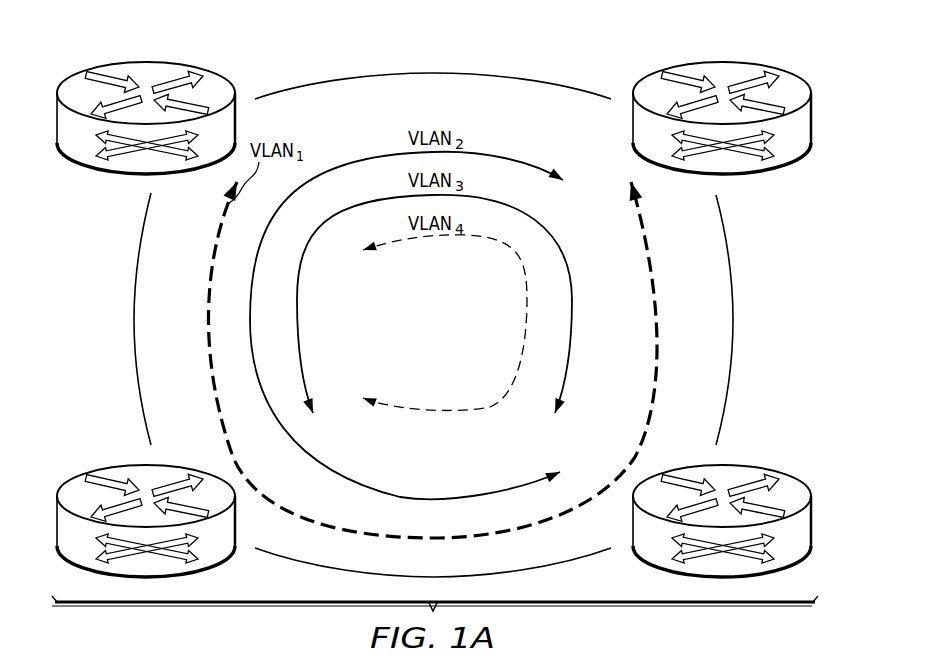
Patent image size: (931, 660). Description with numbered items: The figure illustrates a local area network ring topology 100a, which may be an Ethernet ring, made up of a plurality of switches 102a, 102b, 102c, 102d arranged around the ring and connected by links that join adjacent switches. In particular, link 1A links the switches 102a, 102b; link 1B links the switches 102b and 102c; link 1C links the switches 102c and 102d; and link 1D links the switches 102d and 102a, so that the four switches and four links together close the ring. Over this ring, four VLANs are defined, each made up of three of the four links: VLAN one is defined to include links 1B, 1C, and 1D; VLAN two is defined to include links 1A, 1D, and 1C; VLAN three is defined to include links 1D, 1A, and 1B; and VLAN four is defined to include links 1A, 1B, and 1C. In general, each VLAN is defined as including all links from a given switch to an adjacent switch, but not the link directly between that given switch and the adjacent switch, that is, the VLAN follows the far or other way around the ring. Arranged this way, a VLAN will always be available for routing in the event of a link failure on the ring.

The local area network ring topology 100a is at (266, 50).
The switch 102a is at (118, 70).
The switch 102b is at (748, 70).
The switch 102c is at (743, 472).
The switch 102d is at (123, 472).
The link 1A is at (433, 73).
The link 1B is at (737, 320).
The link 1C is at (433, 562).
The link 1D is at (129, 319).